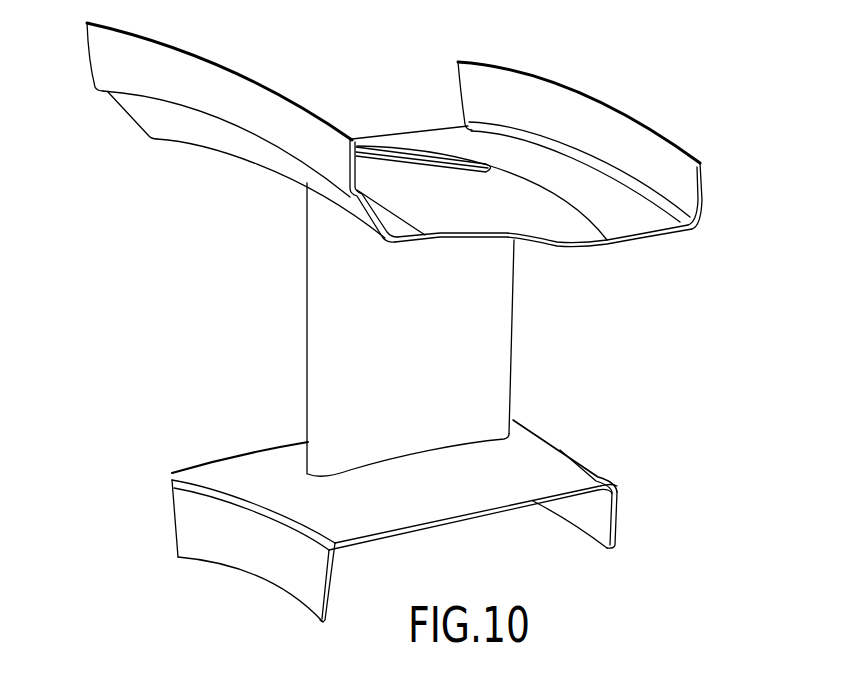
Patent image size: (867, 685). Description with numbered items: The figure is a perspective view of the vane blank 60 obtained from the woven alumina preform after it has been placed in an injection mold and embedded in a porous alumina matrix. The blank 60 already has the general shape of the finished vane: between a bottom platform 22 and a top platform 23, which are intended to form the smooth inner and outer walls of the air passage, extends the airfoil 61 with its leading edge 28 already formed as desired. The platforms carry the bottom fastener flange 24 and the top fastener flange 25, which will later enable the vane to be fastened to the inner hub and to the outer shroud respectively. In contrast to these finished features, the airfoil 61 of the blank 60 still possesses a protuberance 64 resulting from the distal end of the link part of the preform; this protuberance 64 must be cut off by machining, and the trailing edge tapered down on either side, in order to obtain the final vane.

The vane blank 60 is at (678, 49).
The top fastener flange 25 is at (107, 56).
The top platform 23 is at (410, 186).
The airfoil 61 is at (332, 381).
The leading edge 28 is at (307, 322).
The protuberance 64 is at (503, 316).
The bottom platform 22 is at (458, 500).
The bottom fastener flange 24 is at (252, 567).